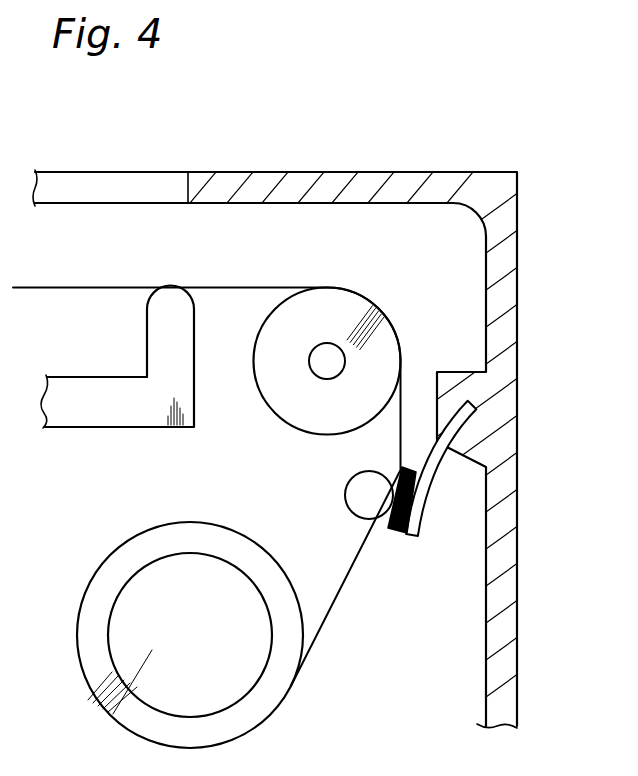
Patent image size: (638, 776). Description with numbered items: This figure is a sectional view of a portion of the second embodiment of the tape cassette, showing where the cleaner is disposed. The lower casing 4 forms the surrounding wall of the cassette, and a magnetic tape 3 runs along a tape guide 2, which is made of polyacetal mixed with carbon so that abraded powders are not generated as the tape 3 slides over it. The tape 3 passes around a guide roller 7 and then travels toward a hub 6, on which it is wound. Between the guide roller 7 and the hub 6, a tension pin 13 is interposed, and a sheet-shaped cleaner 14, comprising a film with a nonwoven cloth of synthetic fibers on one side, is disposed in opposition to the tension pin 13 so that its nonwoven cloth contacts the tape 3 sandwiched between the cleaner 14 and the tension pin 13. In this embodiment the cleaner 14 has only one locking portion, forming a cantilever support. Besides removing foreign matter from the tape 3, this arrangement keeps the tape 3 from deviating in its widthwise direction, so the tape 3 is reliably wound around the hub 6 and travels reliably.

The tape guide 2 is at (82, 417).
The magnetic tape 3 is at (79, 286).
The lower casing 4 is at (455, 180).
The hub 6 is at (113, 706).
The guide roller 7 is at (272, 390).
The tension pin 13 is at (362, 494).
The sheet-shaped cleaner 14 is at (420, 490).